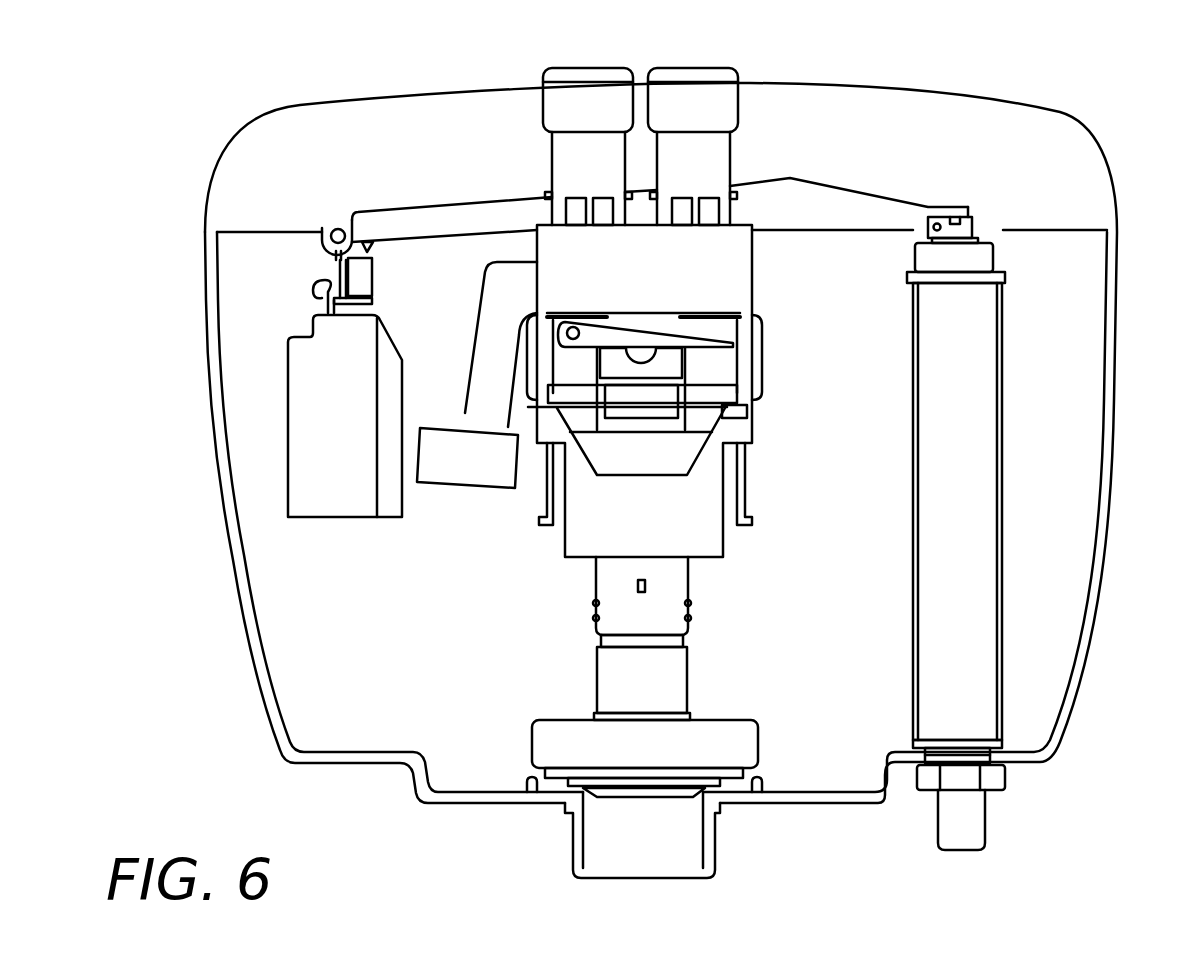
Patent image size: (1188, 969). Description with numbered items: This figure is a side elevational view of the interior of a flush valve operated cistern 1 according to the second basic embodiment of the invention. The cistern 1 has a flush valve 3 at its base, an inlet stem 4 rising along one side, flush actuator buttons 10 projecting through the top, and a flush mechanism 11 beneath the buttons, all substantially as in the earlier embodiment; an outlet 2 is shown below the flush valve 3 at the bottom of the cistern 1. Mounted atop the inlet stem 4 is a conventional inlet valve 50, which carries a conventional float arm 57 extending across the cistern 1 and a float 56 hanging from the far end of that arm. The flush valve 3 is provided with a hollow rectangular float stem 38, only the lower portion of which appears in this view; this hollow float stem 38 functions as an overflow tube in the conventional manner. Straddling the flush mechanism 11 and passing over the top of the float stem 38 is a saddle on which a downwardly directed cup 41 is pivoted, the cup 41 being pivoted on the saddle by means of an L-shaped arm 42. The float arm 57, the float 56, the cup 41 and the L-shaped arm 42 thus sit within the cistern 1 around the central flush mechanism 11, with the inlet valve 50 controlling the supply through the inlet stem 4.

The cistern 1 is at (1100, 500).
The outlet pipe 2 is at (718, 853).
The flush valve 3 is at (735, 740).
The inlet stem 4 is at (975, 500).
The flush actuator buttons 10 is at (572, 72).
The flush mechanism 11 is at (735, 274).
The float stem 38 is at (663, 598).
The cup 41 is at (480, 474).
The L-shaped arm 42 is at (497, 312).
The inlet valve 50 is at (984, 209).
The float 56 is at (315, 463).
The float arm 57 is at (786, 205).